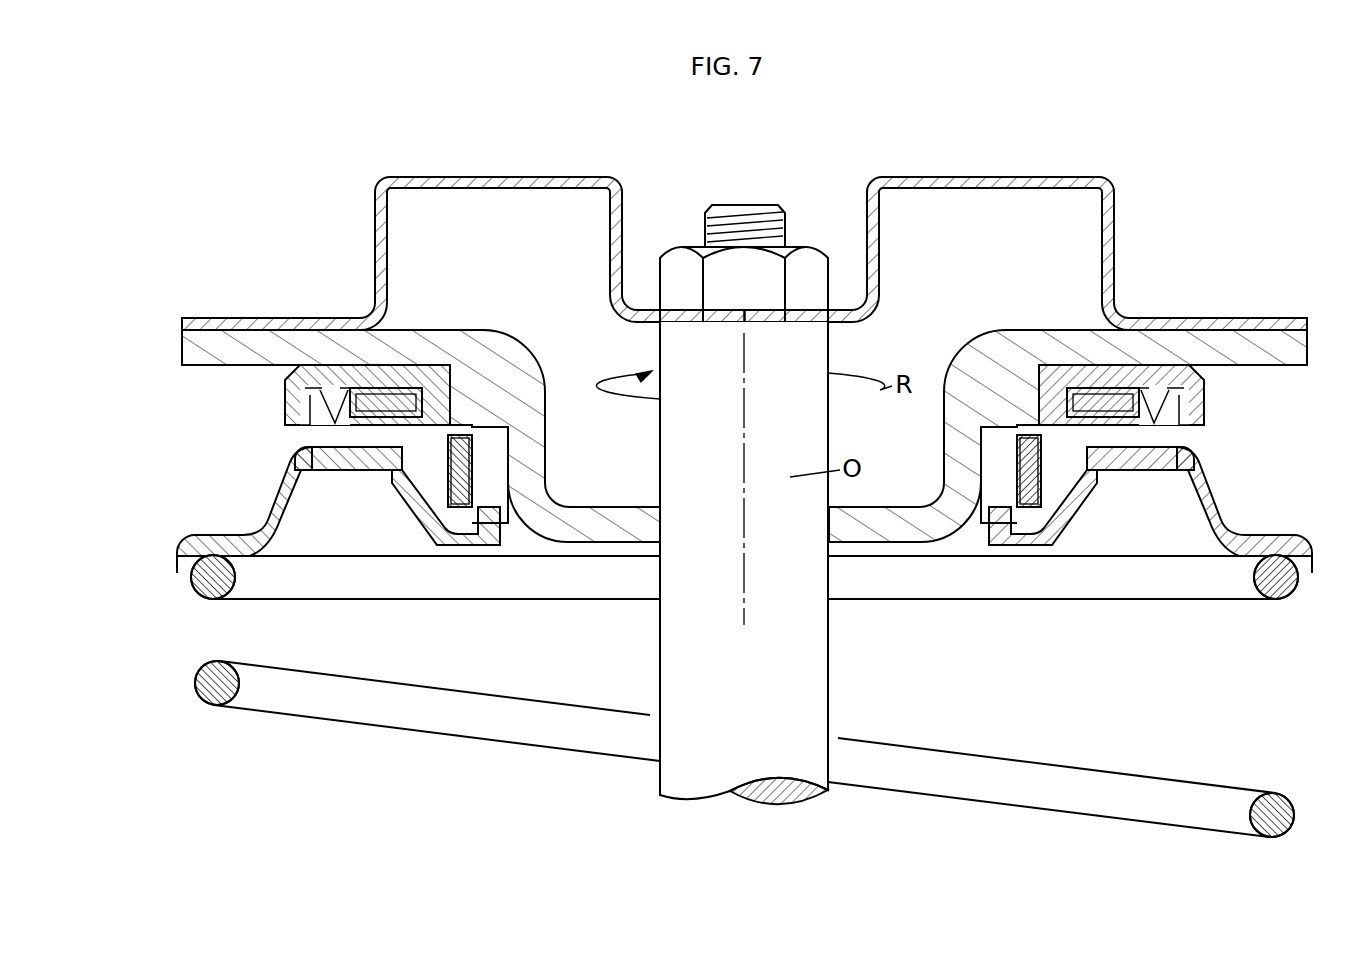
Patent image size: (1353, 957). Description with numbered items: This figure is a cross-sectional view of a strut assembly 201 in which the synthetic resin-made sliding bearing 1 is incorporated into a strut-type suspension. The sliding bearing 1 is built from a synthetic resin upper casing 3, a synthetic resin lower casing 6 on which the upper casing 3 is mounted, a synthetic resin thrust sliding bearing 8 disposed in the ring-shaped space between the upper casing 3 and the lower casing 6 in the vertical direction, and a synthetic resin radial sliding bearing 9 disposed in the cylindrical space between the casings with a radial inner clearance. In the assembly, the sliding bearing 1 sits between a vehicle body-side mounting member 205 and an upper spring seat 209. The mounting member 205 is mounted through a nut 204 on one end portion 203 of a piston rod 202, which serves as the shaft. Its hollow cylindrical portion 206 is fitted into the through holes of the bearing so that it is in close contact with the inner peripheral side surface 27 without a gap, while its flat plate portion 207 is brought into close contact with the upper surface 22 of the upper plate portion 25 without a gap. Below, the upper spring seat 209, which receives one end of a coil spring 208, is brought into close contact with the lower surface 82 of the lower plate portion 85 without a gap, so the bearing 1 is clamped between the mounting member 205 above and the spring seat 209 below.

The synthetic resin-made sliding bearing 1 is at (334, 352).
The upper casing 3 is at (1121, 351).
The lower casing 6 is at (1120, 534).
The thrust sliding bearing 8 is at (1099, 387).
The radial sliding bearing 9 is at (474, 478).
The upper surface 22 is at (1123, 363).
The upper plate portion 25 is at (377, 380).
The inner peripheral side surface 27 is at (978, 440).
The lower surface 82 is at (330, 457).
The lower plate portion 85 is at (1115, 446).
The strut assembly 201 is at (746, 292).
The piston rod 202 is at (676, 778).
The one end portion 203 is at (735, 236).
The nut 204 is at (668, 280).
The vehicle body-side mounting member 205 is at (407, 436).
The hollow cylindrical portion 206 is at (532, 440).
The flat plate portion 207 is at (1283, 352).
The coil spring 208 is at (1183, 587).
The upper spring seat 209 is at (218, 540).